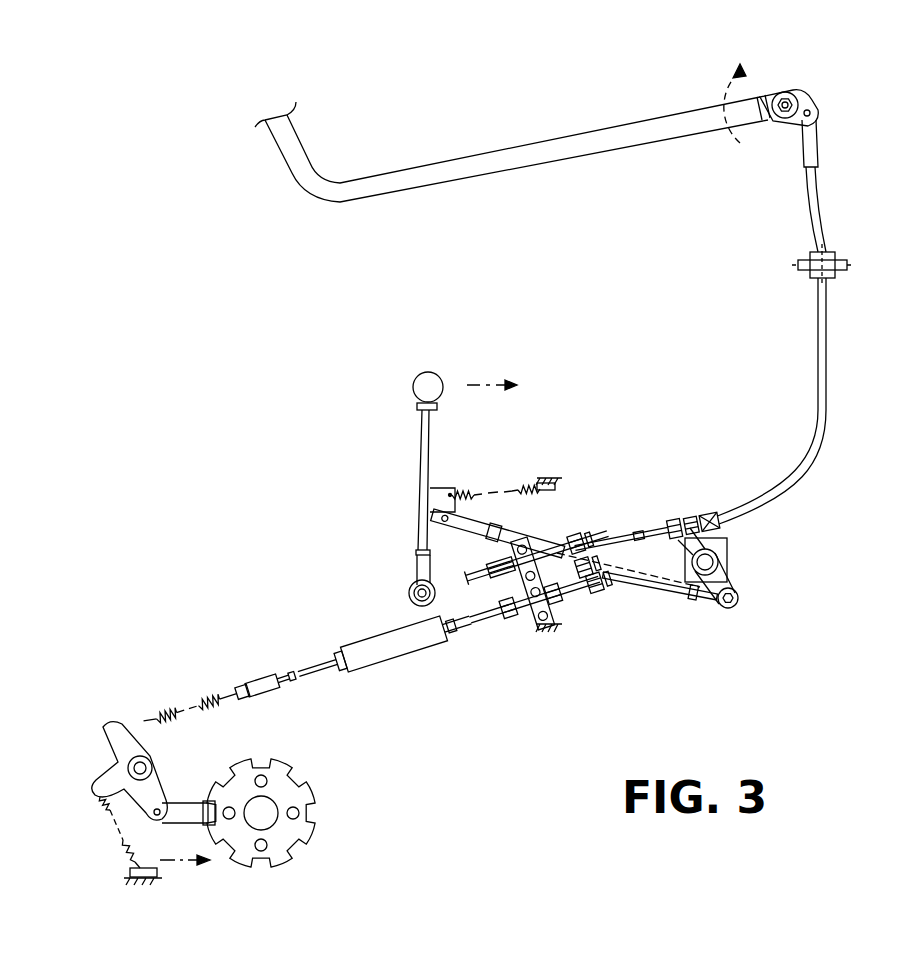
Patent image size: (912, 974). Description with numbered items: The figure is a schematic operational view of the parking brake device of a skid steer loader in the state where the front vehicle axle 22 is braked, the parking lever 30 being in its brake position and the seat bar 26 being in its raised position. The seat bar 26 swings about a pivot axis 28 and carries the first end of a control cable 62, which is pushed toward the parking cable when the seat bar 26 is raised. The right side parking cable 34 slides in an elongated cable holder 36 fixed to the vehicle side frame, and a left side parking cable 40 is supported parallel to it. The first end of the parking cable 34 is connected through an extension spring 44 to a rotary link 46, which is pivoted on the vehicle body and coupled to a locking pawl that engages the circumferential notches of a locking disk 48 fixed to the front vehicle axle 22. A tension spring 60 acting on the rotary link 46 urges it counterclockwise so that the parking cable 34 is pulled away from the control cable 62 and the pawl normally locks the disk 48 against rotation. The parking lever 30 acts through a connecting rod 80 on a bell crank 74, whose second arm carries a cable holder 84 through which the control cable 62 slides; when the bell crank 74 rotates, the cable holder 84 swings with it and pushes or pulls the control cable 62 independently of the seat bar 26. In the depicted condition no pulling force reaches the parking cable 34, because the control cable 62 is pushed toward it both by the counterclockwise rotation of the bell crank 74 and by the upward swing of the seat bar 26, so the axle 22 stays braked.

The front vehicle axle 22 is at (262, 814).
The seat bar 26 is at (538, 161).
The pivot axis 28 is at (788, 100).
The parking lever 30 is at (425, 438).
The right side parking cable 34 is at (574, 597).
The cable holder 36 is at (405, 640).
The left side parking cable 40 is at (558, 550).
The extension spring 44 is at (155, 712).
The rotary link 46 is at (115, 750).
The locking disk 48 is at (306, 797).
The tension spring 60 is at (120, 843).
The control cable 62 is at (652, 528).
The bell crank 74 is at (722, 553).
The connecting rod 80 is at (672, 592).
The cable holder 84 is at (680, 527).